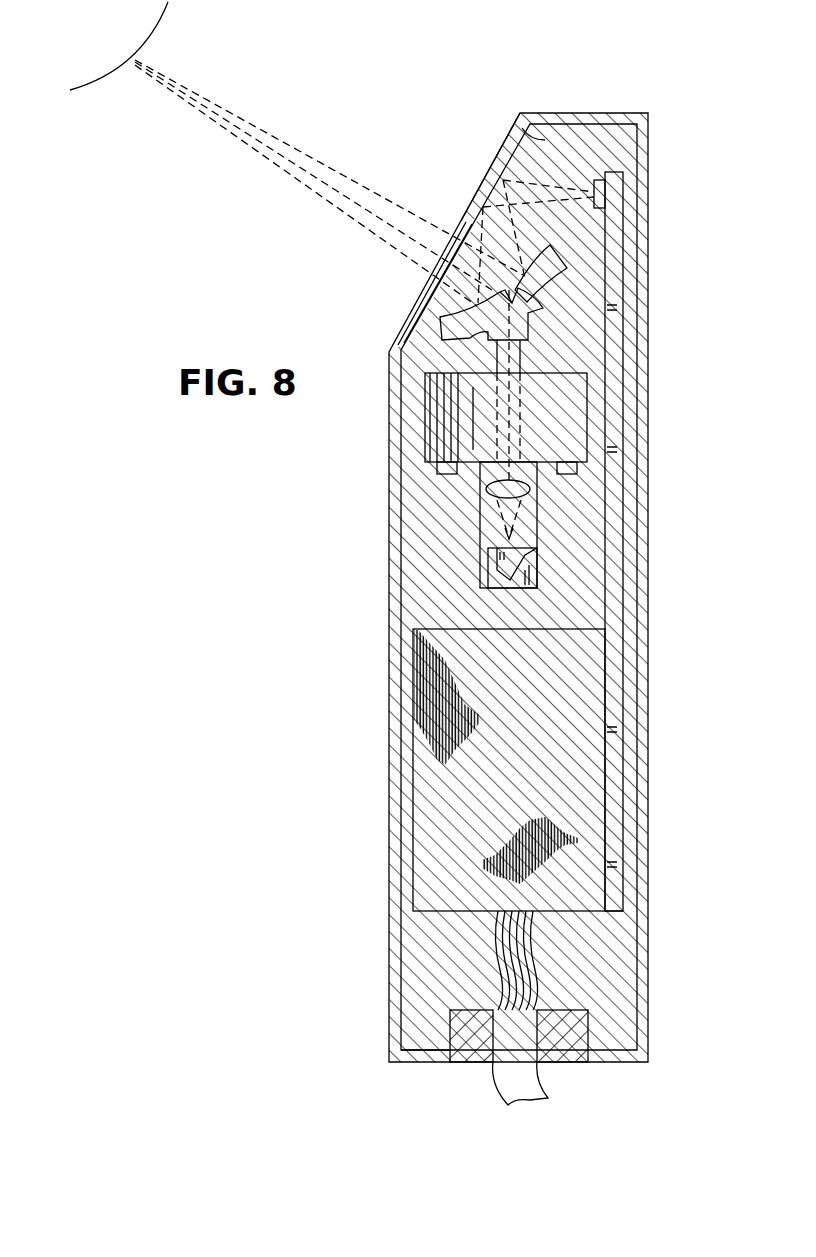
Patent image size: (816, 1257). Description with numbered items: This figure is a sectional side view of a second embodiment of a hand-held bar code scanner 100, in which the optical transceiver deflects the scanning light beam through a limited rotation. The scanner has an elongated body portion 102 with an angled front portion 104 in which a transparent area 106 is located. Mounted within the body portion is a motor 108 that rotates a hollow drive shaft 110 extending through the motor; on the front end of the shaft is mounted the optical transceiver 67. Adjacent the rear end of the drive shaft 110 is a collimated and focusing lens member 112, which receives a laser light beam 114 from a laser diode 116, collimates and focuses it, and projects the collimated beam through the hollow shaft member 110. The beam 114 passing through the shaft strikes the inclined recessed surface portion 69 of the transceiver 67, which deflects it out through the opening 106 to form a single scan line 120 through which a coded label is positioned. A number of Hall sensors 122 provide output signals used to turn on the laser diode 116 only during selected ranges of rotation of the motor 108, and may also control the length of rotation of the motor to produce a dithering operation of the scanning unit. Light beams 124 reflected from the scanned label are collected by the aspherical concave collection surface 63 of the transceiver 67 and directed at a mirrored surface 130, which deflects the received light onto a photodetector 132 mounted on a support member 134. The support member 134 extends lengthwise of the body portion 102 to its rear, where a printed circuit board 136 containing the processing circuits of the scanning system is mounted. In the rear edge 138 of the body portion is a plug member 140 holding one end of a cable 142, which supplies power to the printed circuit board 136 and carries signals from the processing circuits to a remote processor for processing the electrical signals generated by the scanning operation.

The hand-held scanner 100 is at (378, 600).
The elongated body portion 102 is at (650, 372).
The angled front portion 104 is at (505, 150).
The transparent area 106 is at (410, 320).
The motor 108 is at (587, 437).
The hollow drive shaft 110 is at (520, 362).
The collimated and focusing lens member 112 is at (530, 497).
The laser light beam 114 is at (310, 155).
The laser diode 116 is at (488, 565).
The single scan line 120 is at (150, 32).
The Hall sensors 122 is at (438, 470).
The reflected light beams 124 is at (272, 128).
The mirrored surface 130 is at (523, 140).
The photodetector 132 is at (600, 190).
The support member 134 is at (617, 220).
The printed circuit board 136 is at (593, 770).
The rear edge 138 is at (423, 1063).
The plug member 140 is at (450, 1027).
The cable 142 is at (543, 1083).
The aspherical concave surface 63 is at (538, 248).
The optical transceiver 67 is at (543, 308).
The recessed surface portion 69 is at (510, 293).